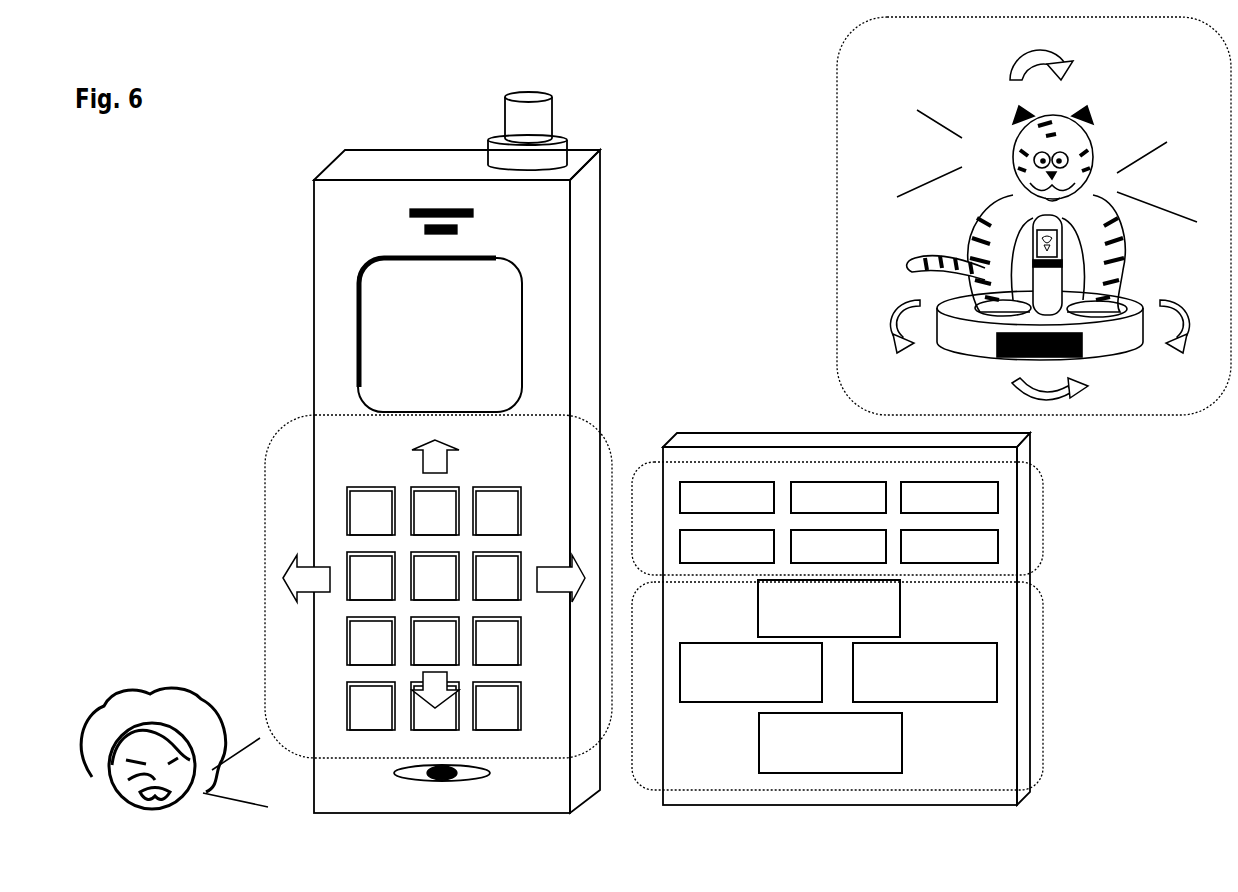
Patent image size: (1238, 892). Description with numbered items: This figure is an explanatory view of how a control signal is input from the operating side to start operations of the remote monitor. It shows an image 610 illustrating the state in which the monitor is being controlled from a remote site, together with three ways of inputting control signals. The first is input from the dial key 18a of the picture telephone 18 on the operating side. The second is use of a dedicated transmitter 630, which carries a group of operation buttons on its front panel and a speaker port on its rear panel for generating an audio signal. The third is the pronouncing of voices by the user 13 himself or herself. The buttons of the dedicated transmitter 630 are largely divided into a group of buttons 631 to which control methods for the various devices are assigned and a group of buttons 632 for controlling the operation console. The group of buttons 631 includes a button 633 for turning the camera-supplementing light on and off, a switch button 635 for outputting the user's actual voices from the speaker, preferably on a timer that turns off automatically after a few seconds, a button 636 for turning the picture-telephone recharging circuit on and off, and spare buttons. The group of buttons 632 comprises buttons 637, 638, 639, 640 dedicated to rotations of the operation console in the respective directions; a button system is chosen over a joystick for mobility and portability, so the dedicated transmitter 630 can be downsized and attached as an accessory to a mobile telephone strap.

The picture telephone 18 is at (317, 243).
The dial key 18a is at (262, 485).
The user 13 is at (175, 713).
The image 610 is at (837, 165).
The dedicated transmitter 630 is at (752, 445).
The group of buttons 631 is at (1043, 510).
The group of buttons 632 is at (1043, 653).
The button 633 is at (730, 482).
The switch button 635 is at (840, 482).
The button 636 is at (935, 482).
The button 637 is at (895, 617).
The button 638 is at (893, 757).
The button 639 is at (953, 700).
The button 640 is at (707, 688).